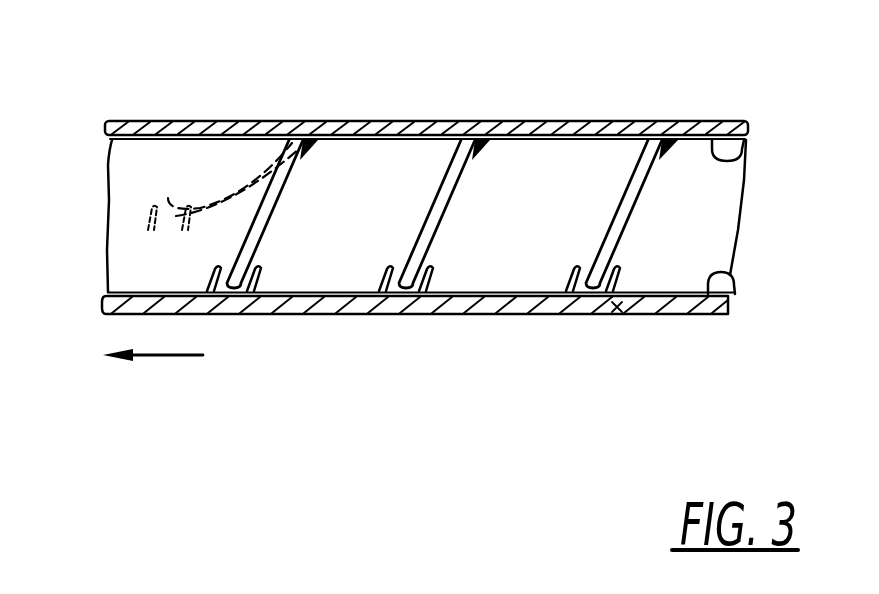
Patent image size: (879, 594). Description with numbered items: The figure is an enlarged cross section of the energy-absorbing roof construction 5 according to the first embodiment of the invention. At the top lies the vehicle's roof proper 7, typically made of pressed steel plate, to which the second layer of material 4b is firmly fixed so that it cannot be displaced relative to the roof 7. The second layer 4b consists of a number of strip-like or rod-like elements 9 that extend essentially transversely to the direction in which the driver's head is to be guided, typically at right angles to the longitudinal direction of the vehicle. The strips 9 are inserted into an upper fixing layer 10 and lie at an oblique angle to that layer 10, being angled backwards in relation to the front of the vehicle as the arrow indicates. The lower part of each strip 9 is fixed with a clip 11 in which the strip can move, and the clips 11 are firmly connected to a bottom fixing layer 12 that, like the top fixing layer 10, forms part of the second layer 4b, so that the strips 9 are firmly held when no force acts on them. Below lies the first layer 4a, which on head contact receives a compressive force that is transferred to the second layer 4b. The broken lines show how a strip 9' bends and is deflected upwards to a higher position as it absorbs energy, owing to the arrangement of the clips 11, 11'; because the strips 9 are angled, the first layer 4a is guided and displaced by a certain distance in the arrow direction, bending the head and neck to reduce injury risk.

The moving belt / conveying assembly 5 is at (562, 80).
The vehicle roof 7 is at (600, 122).
The strip-like element 9 is at (479, 180).
The upper fixing layer 10 is at (742, 157).
The clip 11 is at (413, 339).
The first layer 4a is at (617, 312).
The second layer of material 4b is at (673, 253).
The bottom fixing layer 12 is at (736, 296).
The bent strip 9' is at (161, 179).
The displaced clip 11' is at (102, 218).